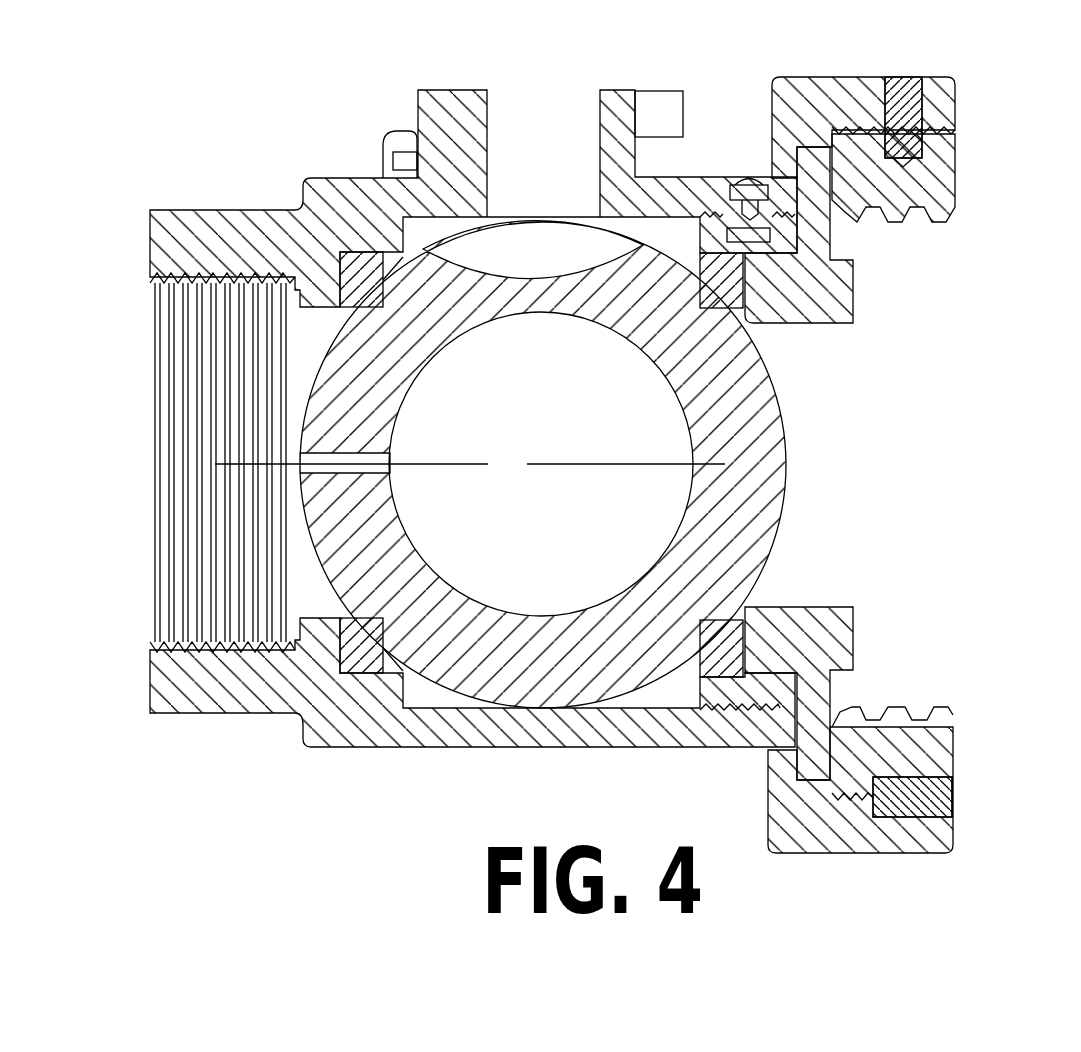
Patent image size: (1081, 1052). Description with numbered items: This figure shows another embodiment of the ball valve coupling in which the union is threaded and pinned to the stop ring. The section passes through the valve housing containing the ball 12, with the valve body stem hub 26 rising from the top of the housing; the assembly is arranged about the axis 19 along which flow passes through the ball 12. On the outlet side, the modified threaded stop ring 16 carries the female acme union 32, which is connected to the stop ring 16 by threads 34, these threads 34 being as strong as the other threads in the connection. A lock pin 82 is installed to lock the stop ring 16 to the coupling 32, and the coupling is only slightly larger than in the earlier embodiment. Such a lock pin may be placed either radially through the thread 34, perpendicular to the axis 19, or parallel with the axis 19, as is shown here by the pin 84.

The ball 12 is at (560, 681).
The threaded stop ring 16 is at (808, 92).
The axis 19 is at (466, 464).
The valve body stem hub 26 is at (614, 115).
The female acme union 32 is at (928, 188).
The thread 34 is at (943, 128).
The lock pin 82 is at (907, 95).
The pin 84 is at (920, 798).